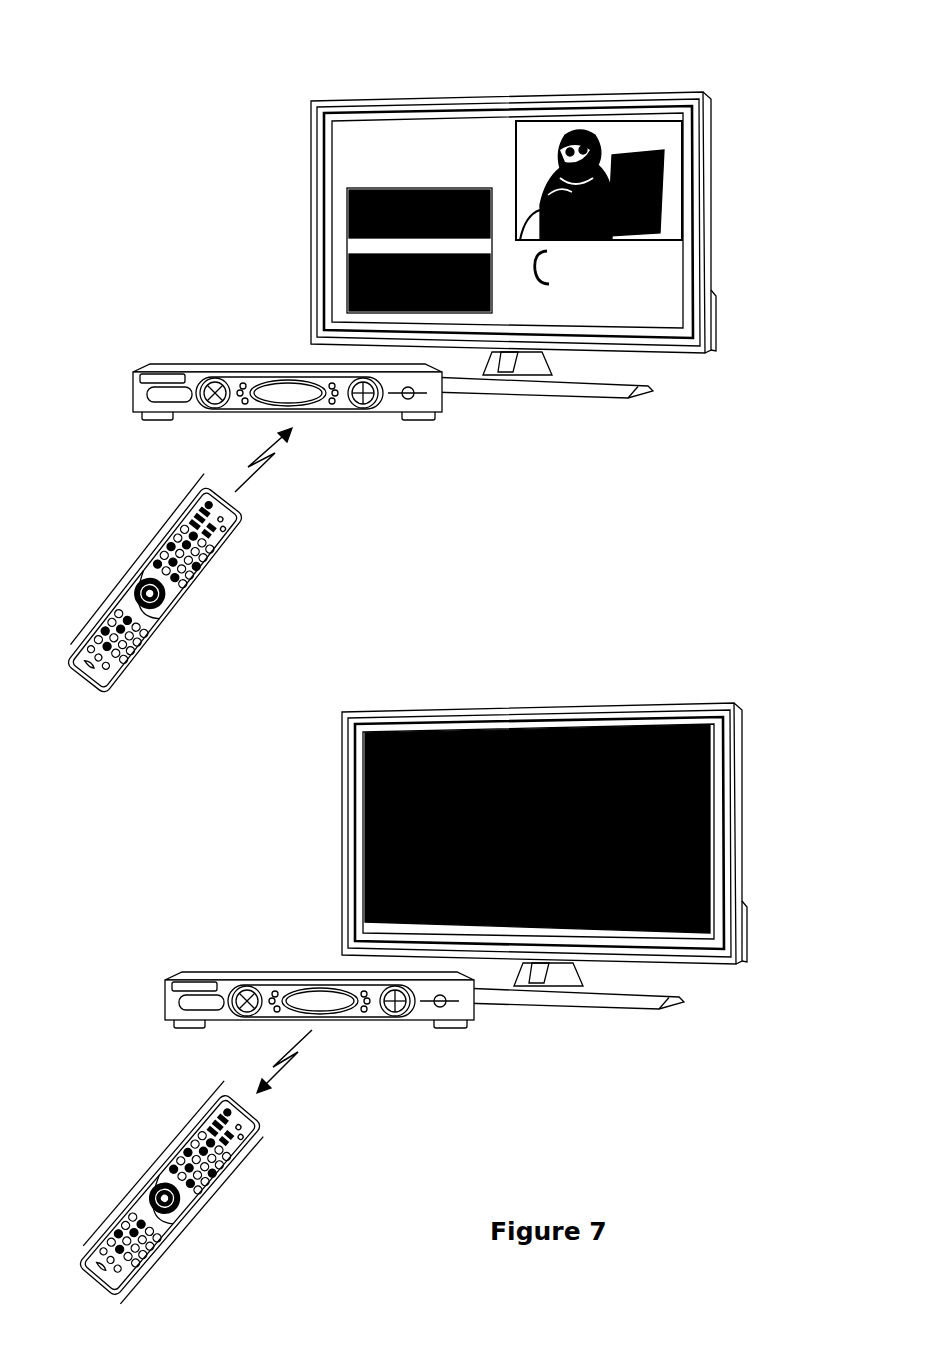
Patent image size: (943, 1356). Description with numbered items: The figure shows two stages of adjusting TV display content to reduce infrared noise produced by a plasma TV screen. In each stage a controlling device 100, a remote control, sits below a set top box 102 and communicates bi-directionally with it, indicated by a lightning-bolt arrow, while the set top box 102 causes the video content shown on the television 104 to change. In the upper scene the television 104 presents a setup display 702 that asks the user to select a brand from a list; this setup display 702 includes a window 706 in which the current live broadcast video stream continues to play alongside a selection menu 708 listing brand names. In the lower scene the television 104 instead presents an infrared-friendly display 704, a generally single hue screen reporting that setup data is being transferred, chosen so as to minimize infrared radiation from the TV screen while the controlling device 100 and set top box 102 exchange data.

The controlling device 100 is at (210, 568).
The set top box 102 is at (132, 392).
The television 104 is at (707, 355).
The setup display 702 is at (488, 165).
The infrared-friendly display 704 is at (615, 780).
The window 706 is at (653, 135).
The selection menu 708 is at (347, 248).